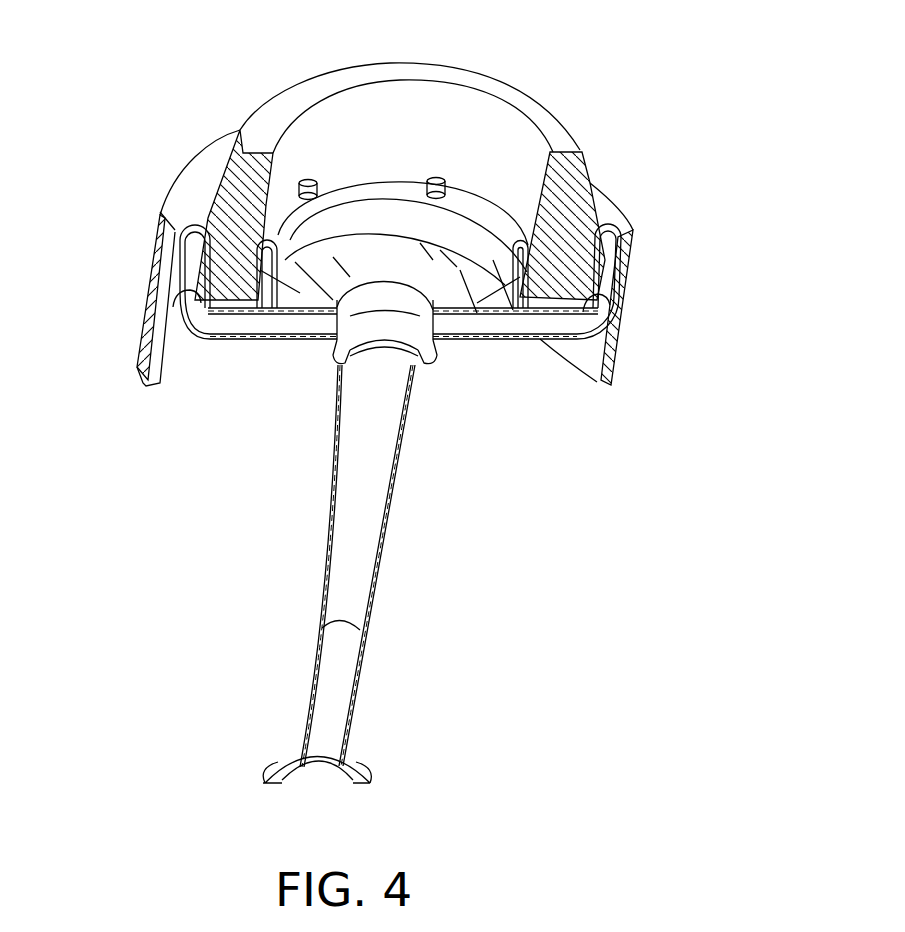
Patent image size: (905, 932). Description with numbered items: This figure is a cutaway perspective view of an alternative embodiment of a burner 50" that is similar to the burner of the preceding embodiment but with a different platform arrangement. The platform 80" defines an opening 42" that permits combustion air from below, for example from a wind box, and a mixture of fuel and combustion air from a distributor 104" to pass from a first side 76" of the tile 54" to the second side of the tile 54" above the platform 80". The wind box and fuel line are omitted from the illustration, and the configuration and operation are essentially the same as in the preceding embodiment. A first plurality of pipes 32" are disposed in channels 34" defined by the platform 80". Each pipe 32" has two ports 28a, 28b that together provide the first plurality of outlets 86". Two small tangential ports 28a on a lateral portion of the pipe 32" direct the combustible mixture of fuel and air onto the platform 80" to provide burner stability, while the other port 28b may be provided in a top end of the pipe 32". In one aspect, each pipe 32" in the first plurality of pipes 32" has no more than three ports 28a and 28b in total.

The burner 50 is at (170, 122).
The tile 54 is at (122, 386).
The tangential ports 28a is at (298, 185).
The port 28b is at (343, 185).
The first plurality of outlets 86 is at (304, 165).
The opening 42 is at (462, 243).
The first plurality of pipes 32 is at (276, 243).
The channels 34 is at (240, 225).
The platform 80 is at (598, 340).
The first side of the tile 76 is at (457, 364).
The distributor 104 is at (430, 363).